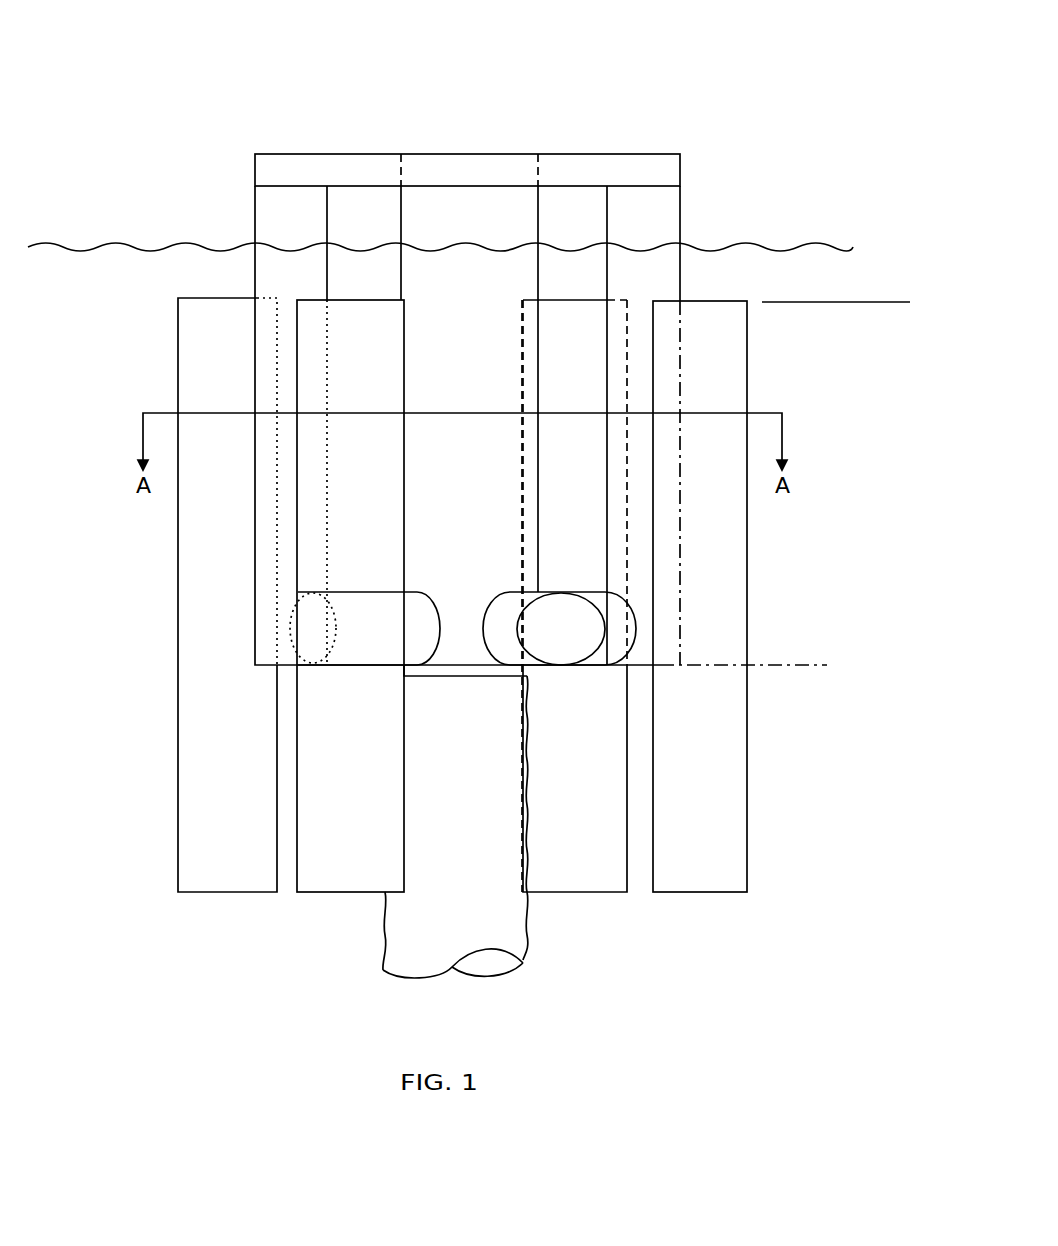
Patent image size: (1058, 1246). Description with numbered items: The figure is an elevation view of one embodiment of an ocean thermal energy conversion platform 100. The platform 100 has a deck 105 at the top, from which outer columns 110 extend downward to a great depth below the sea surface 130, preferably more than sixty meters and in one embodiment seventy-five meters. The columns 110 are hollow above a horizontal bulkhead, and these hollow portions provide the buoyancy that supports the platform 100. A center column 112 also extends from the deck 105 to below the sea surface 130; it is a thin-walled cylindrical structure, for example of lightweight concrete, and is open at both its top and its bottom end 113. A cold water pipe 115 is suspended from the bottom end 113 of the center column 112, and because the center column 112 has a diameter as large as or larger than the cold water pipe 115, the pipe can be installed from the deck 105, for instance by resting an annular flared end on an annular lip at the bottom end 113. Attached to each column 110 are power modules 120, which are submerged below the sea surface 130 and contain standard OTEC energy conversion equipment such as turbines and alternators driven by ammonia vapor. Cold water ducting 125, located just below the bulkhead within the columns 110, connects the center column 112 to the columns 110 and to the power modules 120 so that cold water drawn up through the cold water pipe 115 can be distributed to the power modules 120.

The platform 100 is at (656, 103).
The deck 105 is at (277, 152).
The columns 110 is at (255, 213).
The center column 112 is at (400, 213).
The bottom end 113 is at (438, 680).
The cold water pipe 115 is at (533, 945).
The power modules 120 is at (178, 345).
The cold water ducting 125 is at (360, 592).
The sea surface 130 is at (797, 250).